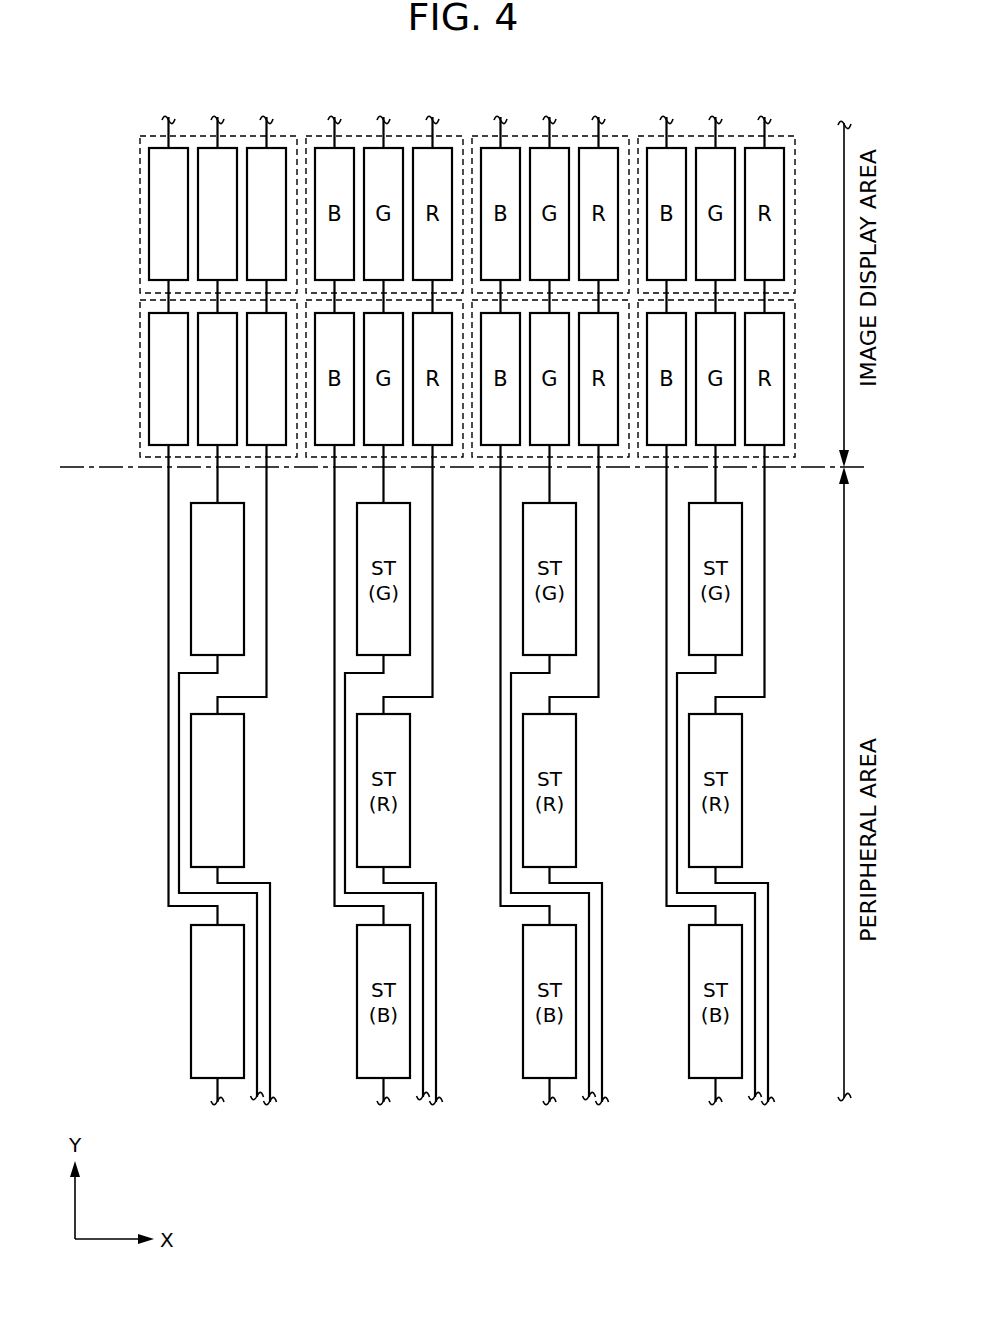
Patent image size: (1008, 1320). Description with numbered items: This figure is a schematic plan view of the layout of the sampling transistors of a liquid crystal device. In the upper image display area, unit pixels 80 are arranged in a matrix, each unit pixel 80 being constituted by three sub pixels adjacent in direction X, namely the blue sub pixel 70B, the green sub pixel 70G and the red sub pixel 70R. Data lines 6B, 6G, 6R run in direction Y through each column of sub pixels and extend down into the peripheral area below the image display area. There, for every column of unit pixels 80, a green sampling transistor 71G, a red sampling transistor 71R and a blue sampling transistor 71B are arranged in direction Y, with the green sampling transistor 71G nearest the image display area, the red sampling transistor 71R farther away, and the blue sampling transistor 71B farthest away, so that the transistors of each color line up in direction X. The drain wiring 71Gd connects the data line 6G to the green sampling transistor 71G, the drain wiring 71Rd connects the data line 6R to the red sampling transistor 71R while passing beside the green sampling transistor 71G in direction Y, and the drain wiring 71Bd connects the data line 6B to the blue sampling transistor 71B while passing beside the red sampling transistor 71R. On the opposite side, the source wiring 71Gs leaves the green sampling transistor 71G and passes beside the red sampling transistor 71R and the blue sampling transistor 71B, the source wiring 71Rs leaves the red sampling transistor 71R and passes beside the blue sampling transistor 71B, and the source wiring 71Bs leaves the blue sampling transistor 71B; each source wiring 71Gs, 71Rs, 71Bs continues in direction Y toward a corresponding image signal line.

The unit pixel 80 is at (140, 148).
The blue sub pixel 70B is at (147, 147).
The green sub pixel 70G is at (199, 147).
The red sub pixel 70R is at (250, 147).
The data line for blue 6B is at (329, 130).
The data line for green 6G is at (378, 130).
The data line for red 6R is at (425, 130).
The drain wiring of green sampling transistor 71Gd is at (217, 482).
The green sampling transistor 71G is at (191, 524).
The drain wiring of red sampling transistor 71Rd is at (267, 545).
The source wiring of green sampling transistor 71Gs is at (179, 690).
The red sampling transistor 71R is at (244, 781).
The drain wiring of blue sampling transistor 71Bd is at (168, 820).
The source wiring of red sampling transistor 71Rs is at (270, 975).
The blue sampling transistor 71B is at (191, 991).
The source wiring of blue sampling transistor 71Bs is at (217, 1088).